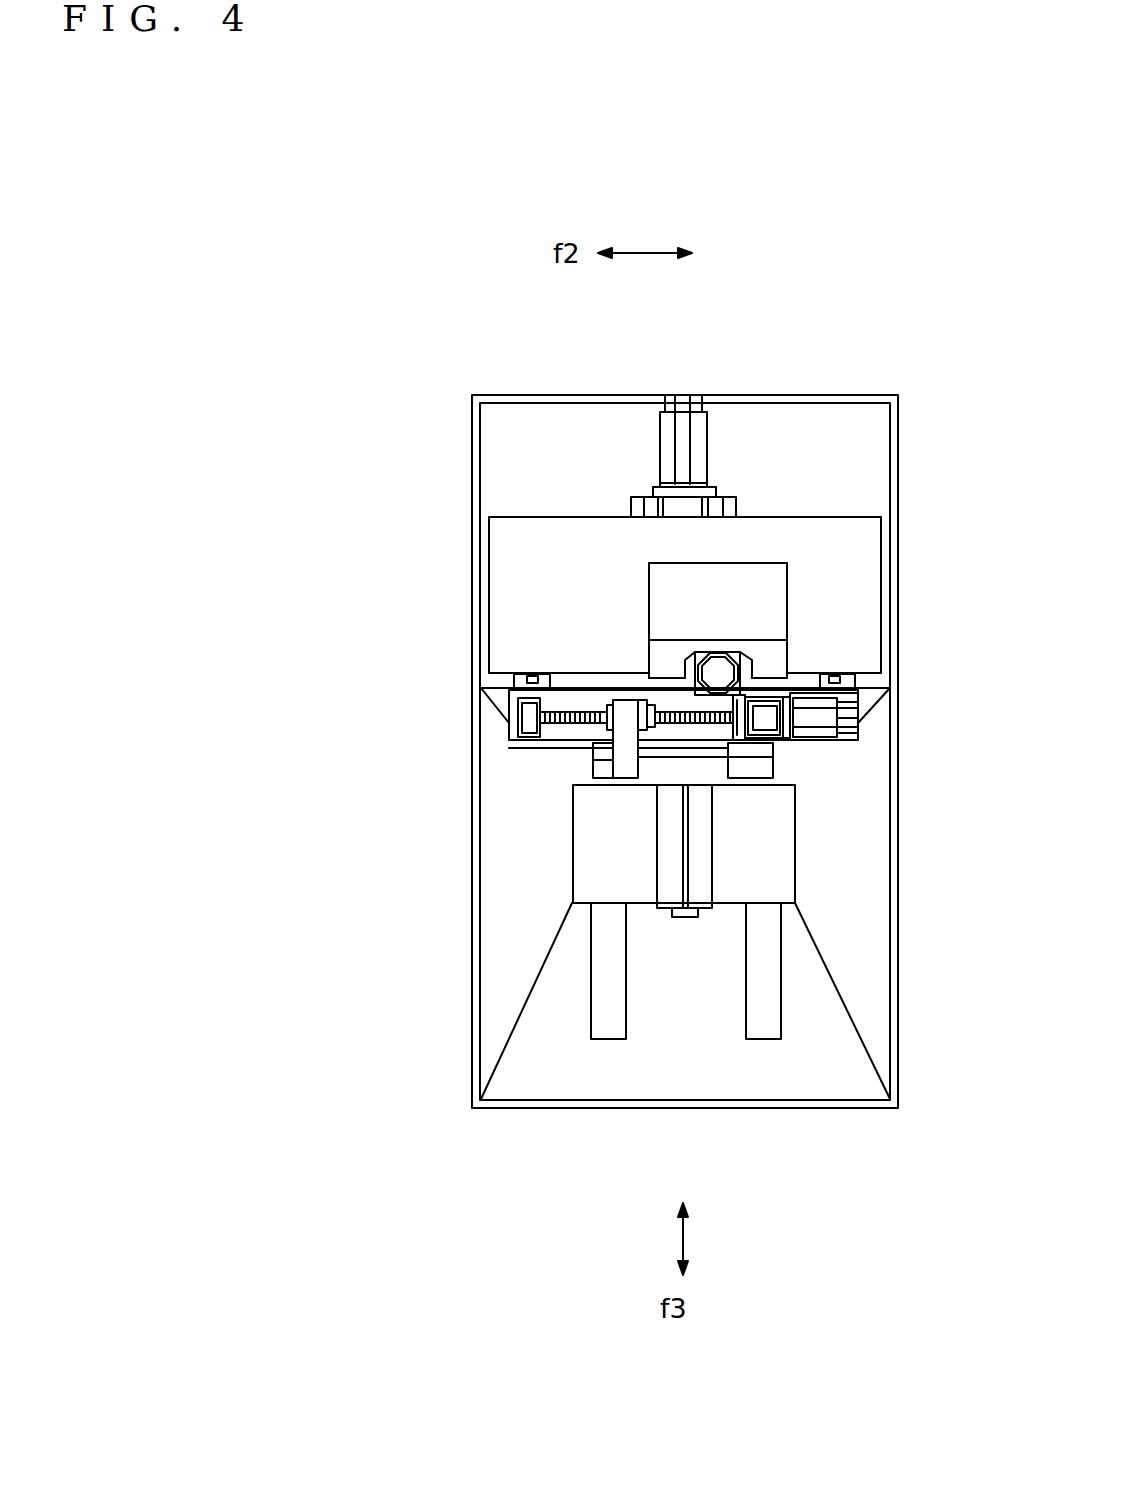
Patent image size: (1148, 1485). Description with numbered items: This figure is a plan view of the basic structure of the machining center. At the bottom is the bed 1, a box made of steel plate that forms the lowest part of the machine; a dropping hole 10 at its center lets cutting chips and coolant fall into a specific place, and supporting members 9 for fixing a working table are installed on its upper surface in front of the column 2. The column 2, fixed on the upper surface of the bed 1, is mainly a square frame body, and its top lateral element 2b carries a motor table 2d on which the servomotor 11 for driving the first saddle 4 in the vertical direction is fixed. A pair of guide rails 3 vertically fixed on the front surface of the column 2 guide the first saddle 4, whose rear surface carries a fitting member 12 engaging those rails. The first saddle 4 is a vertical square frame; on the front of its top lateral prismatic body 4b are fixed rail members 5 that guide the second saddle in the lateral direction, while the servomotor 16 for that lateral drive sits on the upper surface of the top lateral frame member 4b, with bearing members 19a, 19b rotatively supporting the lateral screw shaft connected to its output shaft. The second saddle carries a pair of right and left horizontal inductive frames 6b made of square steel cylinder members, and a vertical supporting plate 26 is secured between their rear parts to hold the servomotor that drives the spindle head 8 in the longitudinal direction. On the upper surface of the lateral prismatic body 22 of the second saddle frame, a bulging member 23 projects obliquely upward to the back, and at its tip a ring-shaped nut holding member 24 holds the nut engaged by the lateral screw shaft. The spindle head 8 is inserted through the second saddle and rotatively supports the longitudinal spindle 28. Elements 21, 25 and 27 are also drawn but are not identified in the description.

The bed 1 is at (873, 958).
The column 2 is at (716, 561).
The top lateral element 2b is at (540, 540).
The motor table 2d is at (668, 650).
The guide rails 3 is at (536, 674).
The first saddle 4 is at (512, 757).
The top lateral prismatic body 4b is at (588, 700).
The rail members 5 is at (800, 745).
The horizontal inductive frames 6b is at (630, 507).
The spindle head 8 is at (665, 850).
The supporting members 9 is at (606, 1027).
The dropping hole 10 is at (780, 855).
The servomotor 11 is at (718, 667).
The fitting member 12 is at (548, 671).
The servomotor 16 is at (820, 720).
The bearing member 19a is at (512, 728).
The bearing member 19b is at (720, 730).
The base plate 21 is at (685, 510).
The lateral prismatic body 22 is at (673, 787).
The bulging member 23 is at (592, 775).
The nut holding member 24 is at (627, 718).
The feed screw 25 is at (645, 707).
The supporting plate 26 is at (652, 487).
The column post 27 is at (708, 453).
The spindle 28 is at (681, 920).